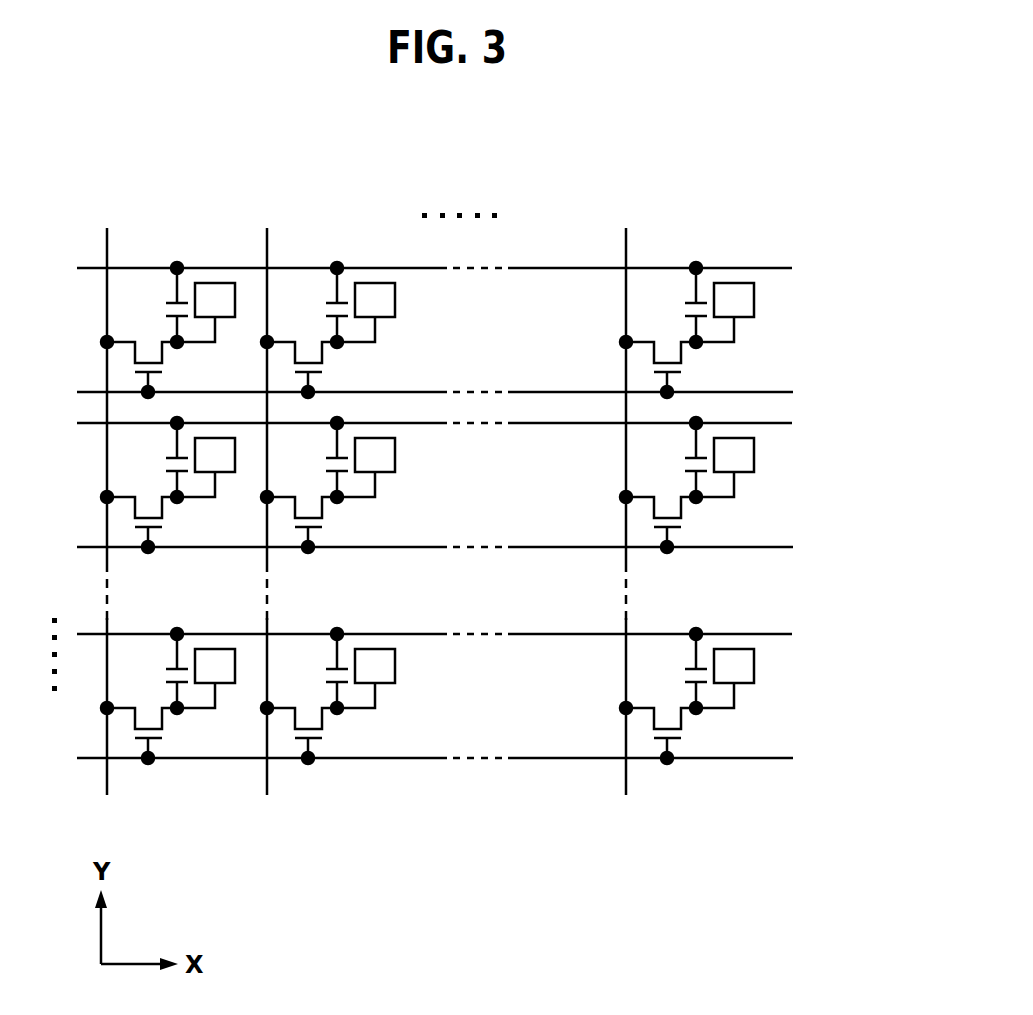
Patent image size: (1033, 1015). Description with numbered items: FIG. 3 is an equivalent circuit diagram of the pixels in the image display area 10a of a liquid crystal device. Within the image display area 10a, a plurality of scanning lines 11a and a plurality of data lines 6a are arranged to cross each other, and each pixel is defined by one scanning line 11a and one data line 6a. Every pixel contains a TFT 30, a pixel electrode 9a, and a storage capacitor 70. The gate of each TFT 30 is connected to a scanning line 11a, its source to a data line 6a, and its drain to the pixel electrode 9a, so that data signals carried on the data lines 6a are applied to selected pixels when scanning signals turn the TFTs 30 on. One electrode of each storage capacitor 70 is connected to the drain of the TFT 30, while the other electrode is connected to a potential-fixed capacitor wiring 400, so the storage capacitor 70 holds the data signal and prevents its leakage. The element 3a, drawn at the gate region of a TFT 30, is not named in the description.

The image display area 10a is at (745, 145).
The data line 6a is at (107, 245).
The scanning line 11a is at (777, 392).
The capacitor wiring 400 is at (777, 268).
The pixel electrode 9a is at (754, 317).
The storage capacitor 70 is at (160, 312).
The TFT 30 is at (128, 357).
The semiconductor layer of TFT 3a is at (677, 740).